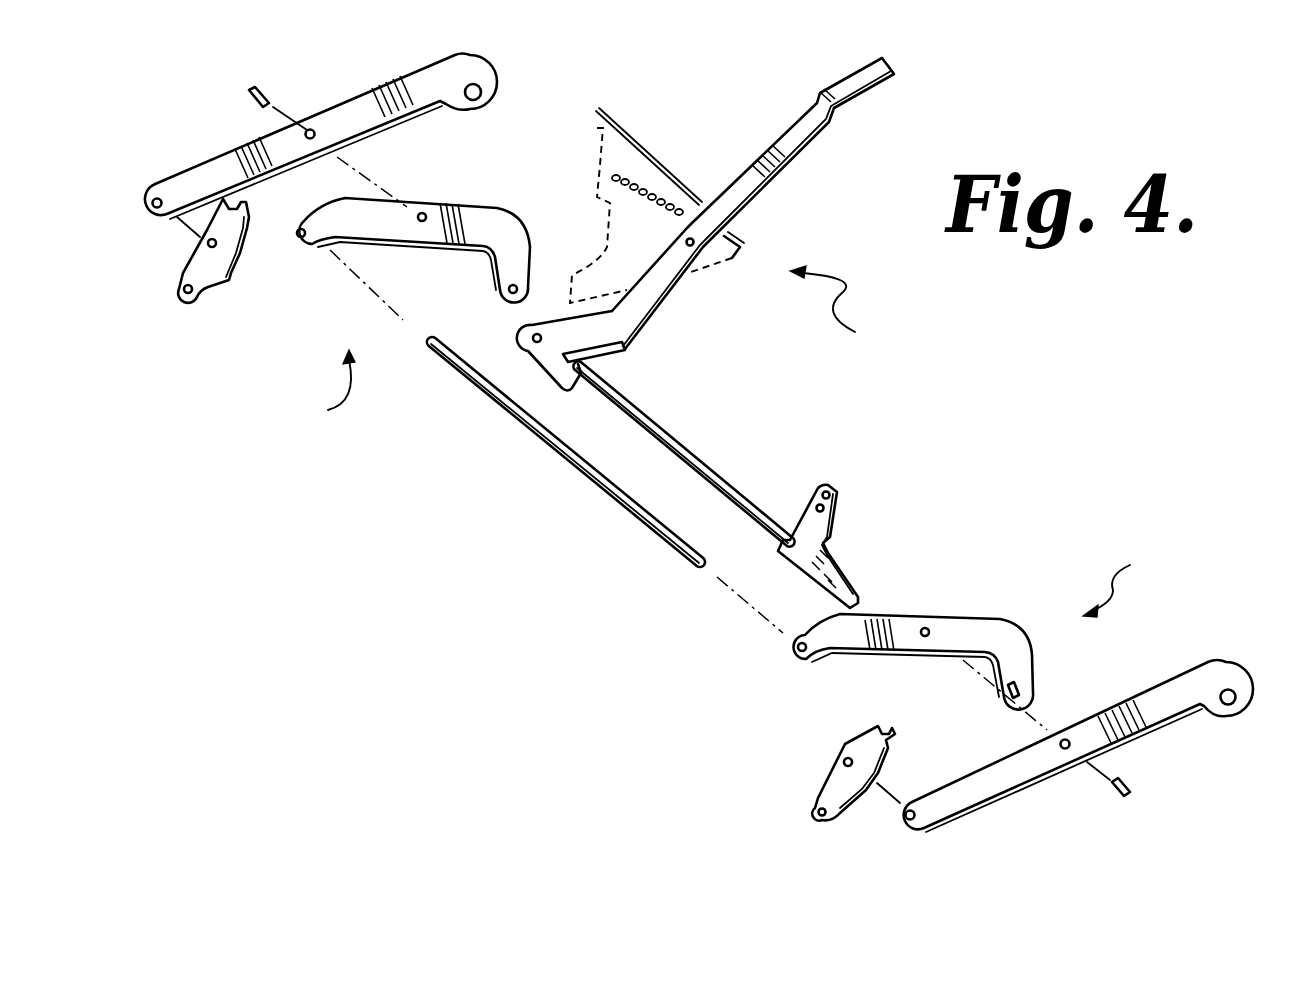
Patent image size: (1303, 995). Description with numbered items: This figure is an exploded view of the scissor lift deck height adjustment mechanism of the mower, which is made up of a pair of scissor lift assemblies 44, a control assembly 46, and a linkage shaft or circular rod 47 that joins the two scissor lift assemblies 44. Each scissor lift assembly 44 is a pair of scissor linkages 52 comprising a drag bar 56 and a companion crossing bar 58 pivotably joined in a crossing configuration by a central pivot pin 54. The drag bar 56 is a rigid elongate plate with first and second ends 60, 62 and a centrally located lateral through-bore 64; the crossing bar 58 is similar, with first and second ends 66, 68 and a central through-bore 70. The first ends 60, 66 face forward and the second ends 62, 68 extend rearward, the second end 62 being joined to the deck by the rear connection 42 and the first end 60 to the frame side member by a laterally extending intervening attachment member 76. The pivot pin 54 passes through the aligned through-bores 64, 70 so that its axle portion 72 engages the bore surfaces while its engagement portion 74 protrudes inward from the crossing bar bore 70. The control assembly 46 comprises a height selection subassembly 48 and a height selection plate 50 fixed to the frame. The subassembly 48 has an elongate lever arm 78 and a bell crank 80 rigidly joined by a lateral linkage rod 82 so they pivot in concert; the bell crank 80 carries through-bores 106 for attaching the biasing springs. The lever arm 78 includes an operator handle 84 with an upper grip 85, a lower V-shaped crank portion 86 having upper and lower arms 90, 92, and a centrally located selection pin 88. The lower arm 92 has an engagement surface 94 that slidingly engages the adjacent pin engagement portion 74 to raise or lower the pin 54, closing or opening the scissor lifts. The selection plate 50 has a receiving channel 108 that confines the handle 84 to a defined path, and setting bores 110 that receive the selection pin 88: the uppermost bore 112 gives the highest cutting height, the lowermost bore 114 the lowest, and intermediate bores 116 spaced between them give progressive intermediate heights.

The rear connection 42 is at (226, 274).
The scissor lift assembly 44 is at (1113, 577).
The control assembly 46 is at (838, 309).
The linkage shaft 47 is at (567, 461).
The height selection subassembly 48 is at (784, 173).
The height selection plate 50 is at (627, 128).
The scissor linkage 52 is at (323, 386).
The pivot pin 54 is at (254, 89).
The drag bar 56 is at (407, 78).
The crossing bar 58 is at (507, 222).
The first end of drag bar 60 is at (492, 66).
The second end of drag bar 62 is at (168, 184).
The through-bore of drag bar 64 is at (310, 129).
The first end of crossing bar 66 is at (496, 279).
The second end of crossing bar 68 is at (304, 243).
The through-bore of crossing bar 70 is at (417, 221).
The axle portion 72 is at (247, 96).
The engagement portion 74 is at (262, 108).
The intervening attachment member 76 is at (800, 526).
The lever arm 78 is at (764, 214).
The bell crank 80 is at (832, 541).
The lateral linkage rod 82 is at (673, 440).
The operator handle 84 is at (653, 307).
The upper grip 85 is at (873, 78).
The crank portion 86 is at (527, 336).
The selection pin 88 is at (700, 258).
The upper arm of crank portion 90 is at (597, 338).
The lower arm of crank portion 92 is at (557, 384).
The engagement surface 94 is at (580, 363).
The through-bores 106 is at (825, 509).
The receiving channel 108 is at (633, 152).
The bores 110 is at (665, 168).
The uppermost bore 112 is at (610, 182).
The lowermost bore 114 is at (708, 191).
The intermediate bores 116 is at (628, 182).